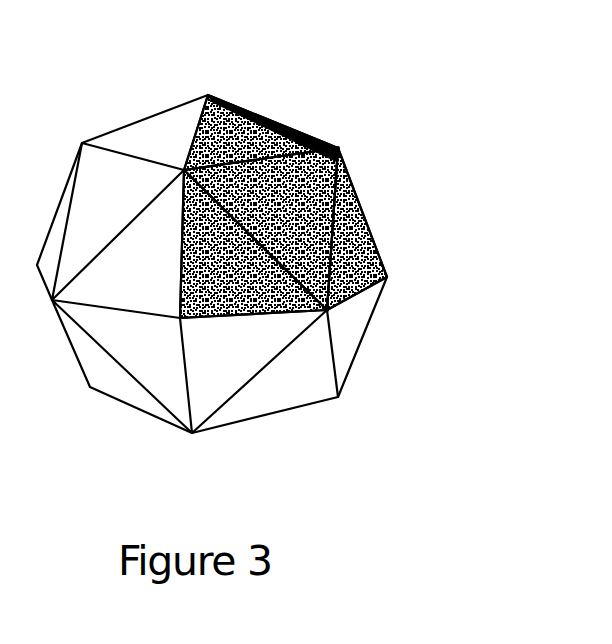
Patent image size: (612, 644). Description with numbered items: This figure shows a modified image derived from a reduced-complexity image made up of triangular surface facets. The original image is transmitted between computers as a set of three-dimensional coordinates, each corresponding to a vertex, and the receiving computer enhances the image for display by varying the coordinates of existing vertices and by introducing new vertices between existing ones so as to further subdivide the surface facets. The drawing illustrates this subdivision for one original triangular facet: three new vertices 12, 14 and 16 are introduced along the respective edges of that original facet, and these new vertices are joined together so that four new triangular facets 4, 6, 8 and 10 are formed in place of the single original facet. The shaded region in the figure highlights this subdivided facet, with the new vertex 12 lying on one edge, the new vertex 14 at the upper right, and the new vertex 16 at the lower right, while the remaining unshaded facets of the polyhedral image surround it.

The new triangular facet 4 is at (258, 122).
The new triangular facet 6 is at (309, 203).
The new triangular facet 8 is at (355, 242).
The new triangular facet 10 is at (265, 295).
The new vertex 12 is at (173, 158).
The new vertex 14 is at (342, 140).
The new vertex 16 is at (335, 313).